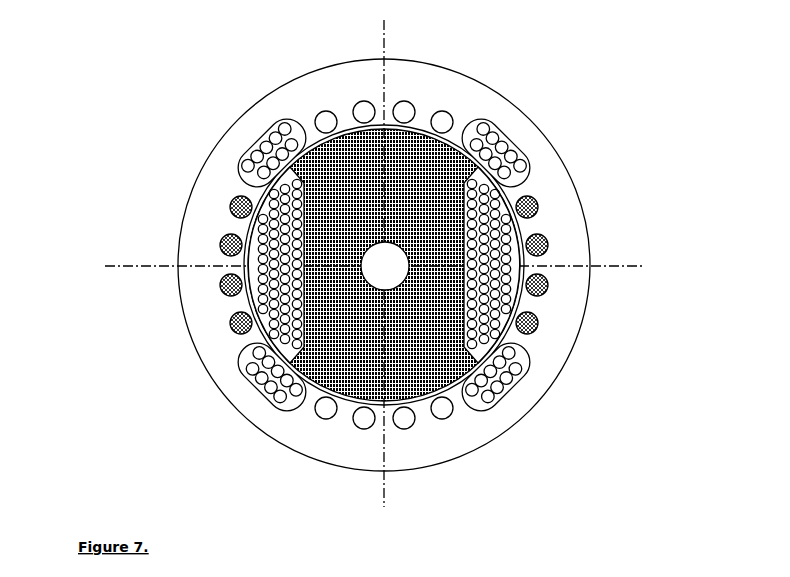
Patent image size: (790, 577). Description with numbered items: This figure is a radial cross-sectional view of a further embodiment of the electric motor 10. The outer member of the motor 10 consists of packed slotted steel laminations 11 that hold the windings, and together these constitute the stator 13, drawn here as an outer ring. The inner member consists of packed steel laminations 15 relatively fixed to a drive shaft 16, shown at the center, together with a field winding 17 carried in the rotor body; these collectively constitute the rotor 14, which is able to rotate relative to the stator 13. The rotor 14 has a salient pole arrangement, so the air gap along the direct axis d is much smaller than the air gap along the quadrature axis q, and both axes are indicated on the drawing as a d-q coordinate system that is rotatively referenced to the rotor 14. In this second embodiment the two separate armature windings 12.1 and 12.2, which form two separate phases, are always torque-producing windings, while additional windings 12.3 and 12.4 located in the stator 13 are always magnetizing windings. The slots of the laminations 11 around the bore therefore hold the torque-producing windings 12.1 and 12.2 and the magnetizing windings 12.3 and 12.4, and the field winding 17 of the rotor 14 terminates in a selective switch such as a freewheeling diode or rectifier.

The electric motor 10 is at (153, 62).
The packed slotted steel laminations 11 is at (440, 74).
The armature winding 12.1 is at (379, 266).
The armature winding 12.2 is at (385, 260).
The magnetizing winding 12.3 is at (391, 264).
The magnetizing winding 12.4 is at (387, 264).
The stator 13 is at (586, 216).
The rotor 14 is at (438, 381).
The packed steel laminations 15 is at (347, 337).
The drive shaft 16 is at (372, 275).
The field winding 17 is at (268, 232).